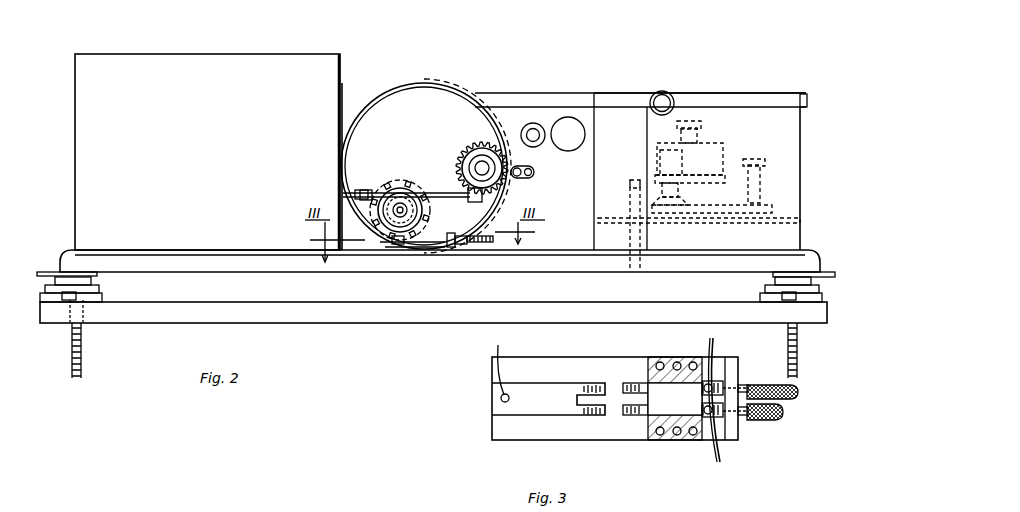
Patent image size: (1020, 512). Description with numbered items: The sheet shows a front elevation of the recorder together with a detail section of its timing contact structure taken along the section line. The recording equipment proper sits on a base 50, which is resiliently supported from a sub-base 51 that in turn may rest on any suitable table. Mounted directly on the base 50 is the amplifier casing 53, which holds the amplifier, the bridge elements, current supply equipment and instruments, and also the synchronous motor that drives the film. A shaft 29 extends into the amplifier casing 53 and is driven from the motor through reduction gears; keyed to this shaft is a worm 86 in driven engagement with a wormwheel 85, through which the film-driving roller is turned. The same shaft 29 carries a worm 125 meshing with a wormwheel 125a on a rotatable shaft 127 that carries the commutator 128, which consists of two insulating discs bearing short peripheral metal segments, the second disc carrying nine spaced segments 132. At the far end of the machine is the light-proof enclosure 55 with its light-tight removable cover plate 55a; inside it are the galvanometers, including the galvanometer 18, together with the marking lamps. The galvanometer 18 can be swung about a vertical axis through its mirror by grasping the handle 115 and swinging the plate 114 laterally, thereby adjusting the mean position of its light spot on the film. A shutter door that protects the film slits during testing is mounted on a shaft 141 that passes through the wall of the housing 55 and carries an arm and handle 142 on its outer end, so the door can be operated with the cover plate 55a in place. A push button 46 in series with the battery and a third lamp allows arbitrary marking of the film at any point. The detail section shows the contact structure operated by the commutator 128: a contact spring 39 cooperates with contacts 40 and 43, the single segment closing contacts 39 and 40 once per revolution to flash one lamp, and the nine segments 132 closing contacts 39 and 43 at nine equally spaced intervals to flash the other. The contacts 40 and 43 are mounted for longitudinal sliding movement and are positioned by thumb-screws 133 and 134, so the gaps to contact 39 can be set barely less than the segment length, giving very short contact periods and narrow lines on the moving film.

In FIG. 2, the galvanometer 18 is at (720, 150).
In FIG. 2, the shaft 29 is at (450, 198).
In FIG. 3, the contact spring 39 is at (590, 384).
In FIG. 3, the contact spring 40 is at (632, 383).
In FIG. 3, the contact 43 is at (640, 416).
In FIG. 2, the push button 46 is at (535, 124).
In FIG. 2, the base 50 is at (240, 262).
In FIG. 2, the sub-base 51 is at (205, 306).
In FIG. 2, the amplifier casing 53 is at (246, 64).
In FIG. 2, the light-proof enclosure 55 is at (800, 136).
In FIG. 2, the cover plate 55a is at (732, 94).
In FIG. 2, the wormwheel 85 is at (478, 147).
In FIG. 2, the worm 86 is at (490, 215).
In FIG. 2, the plate 114 is at (717, 212).
In FIG. 2, the handle 115 is at (764, 158).
In FIG. 2, the worm 125 is at (402, 186).
In FIG. 2, the wormwheel 125a is at (387, 250).
In FIG. 2, the rotatable shaft 127 is at (380, 193).
In FIG. 2, the commutator 128 is at (424, 232).
In FIG. 2, the segments 132 is at (416, 198).
In FIG. 3, the thumb-screw 133 is at (758, 385).
In FIG. 3, the thumb-screw 134 is at (765, 420).
In FIG. 2, the shaft 141 is at (518, 167).
In FIG. 2, the arm and handle 142 is at (530, 175).